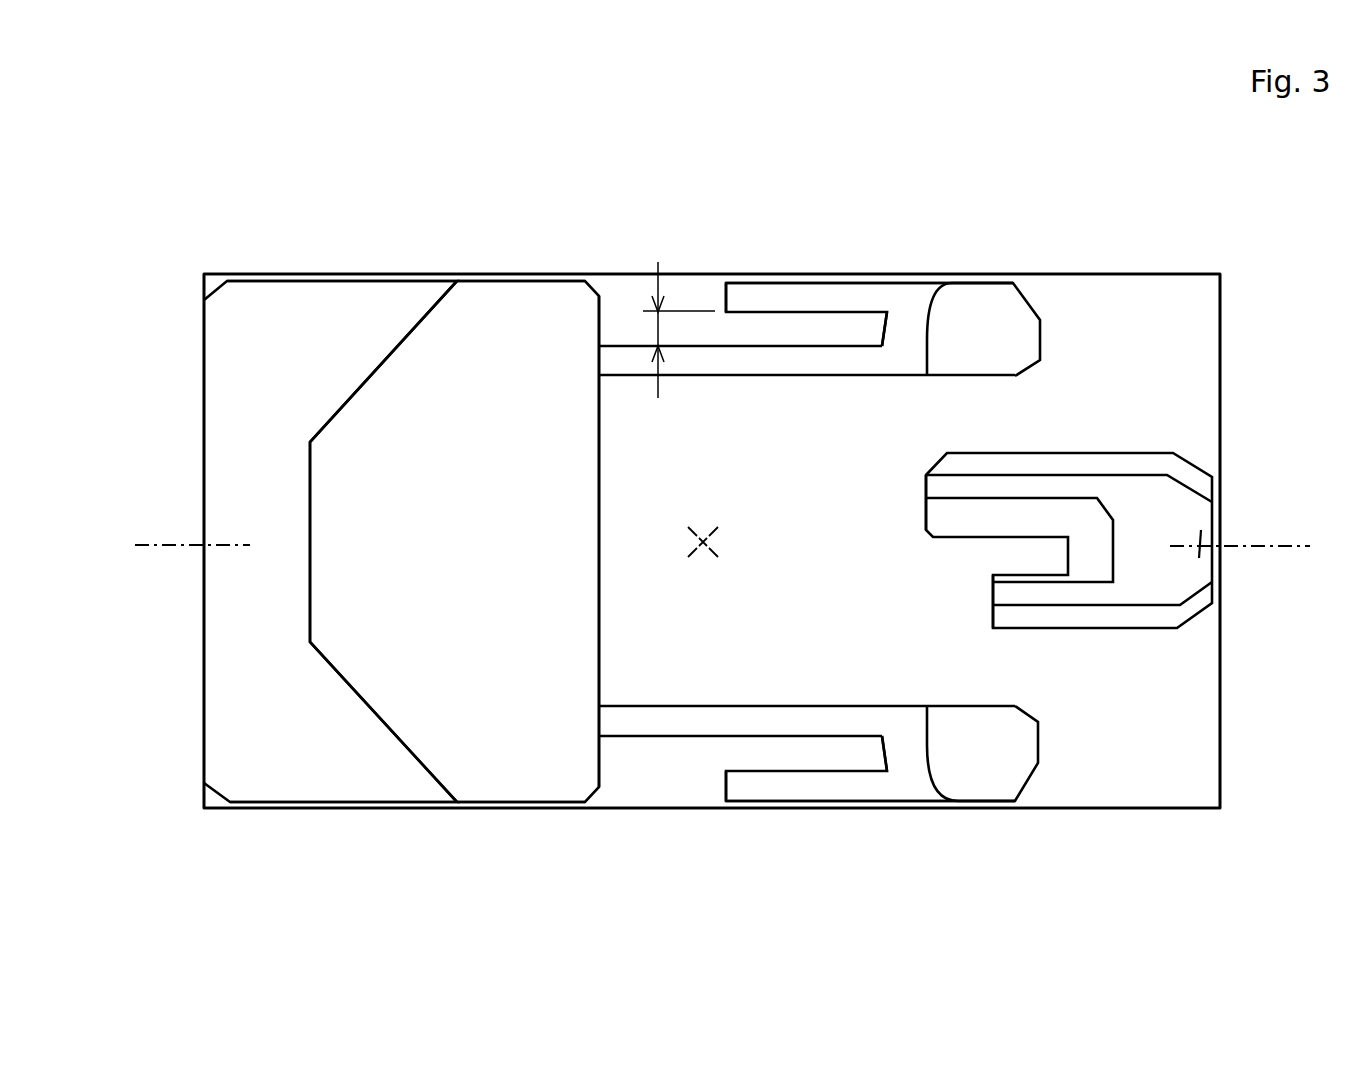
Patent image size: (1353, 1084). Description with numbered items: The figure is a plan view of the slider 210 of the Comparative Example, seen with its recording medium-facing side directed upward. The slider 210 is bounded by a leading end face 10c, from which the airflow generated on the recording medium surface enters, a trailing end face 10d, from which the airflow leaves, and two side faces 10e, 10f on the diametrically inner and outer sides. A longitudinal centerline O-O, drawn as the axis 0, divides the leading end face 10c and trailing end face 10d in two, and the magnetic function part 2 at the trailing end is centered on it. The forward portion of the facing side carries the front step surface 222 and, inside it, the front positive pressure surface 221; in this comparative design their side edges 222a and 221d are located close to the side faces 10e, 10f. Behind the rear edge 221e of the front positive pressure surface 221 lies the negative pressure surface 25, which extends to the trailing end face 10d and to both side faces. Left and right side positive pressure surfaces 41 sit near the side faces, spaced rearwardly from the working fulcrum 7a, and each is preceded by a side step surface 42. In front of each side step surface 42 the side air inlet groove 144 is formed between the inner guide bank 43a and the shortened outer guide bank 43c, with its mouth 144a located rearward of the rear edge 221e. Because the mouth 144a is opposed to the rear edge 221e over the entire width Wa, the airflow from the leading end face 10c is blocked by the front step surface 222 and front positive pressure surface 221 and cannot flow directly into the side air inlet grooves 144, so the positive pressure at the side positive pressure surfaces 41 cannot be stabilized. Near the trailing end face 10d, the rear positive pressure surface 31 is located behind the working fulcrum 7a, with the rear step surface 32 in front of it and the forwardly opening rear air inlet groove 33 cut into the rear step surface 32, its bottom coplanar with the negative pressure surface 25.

The slider 210 is at (1192, 246).
The leading end face 10c is at (204, 620).
The trailing end face 10d is at (1220, 700).
The side face 10e is at (662, 809).
The side face 10f is at (815, 274).
The front step surface 222 is at (228, 428).
The front positive pressure surface 221 is at (350, 511).
The side edge 222a is at (301, 274).
The side edge 221d is at (508, 274).
The rear edge 221e is at (599, 588).
The inner guide bank 43a is at (792, 360).
The side air inlet groove 144 is at (786, 326).
The mouth 144a is at (717, 326).
The outer guide bank 43c is at (852, 300).
The side step surface 42 is at (911, 320).
The side positive pressure surface 41 is at (985, 304).
The width Wa is at (652, 332).
The working fulcrum 7a is at (710, 541).
The centerline 0 is at (717, 548).
The magnetic function part 2 is at (1205, 530).
The rear positive pressure surface 31 is at (1092, 502).
The rear step surface 32 is at (1083, 538).
The rear air inlet groove 33 is at (1028, 552).
The negative pressure surface 25 is at (963, 657).